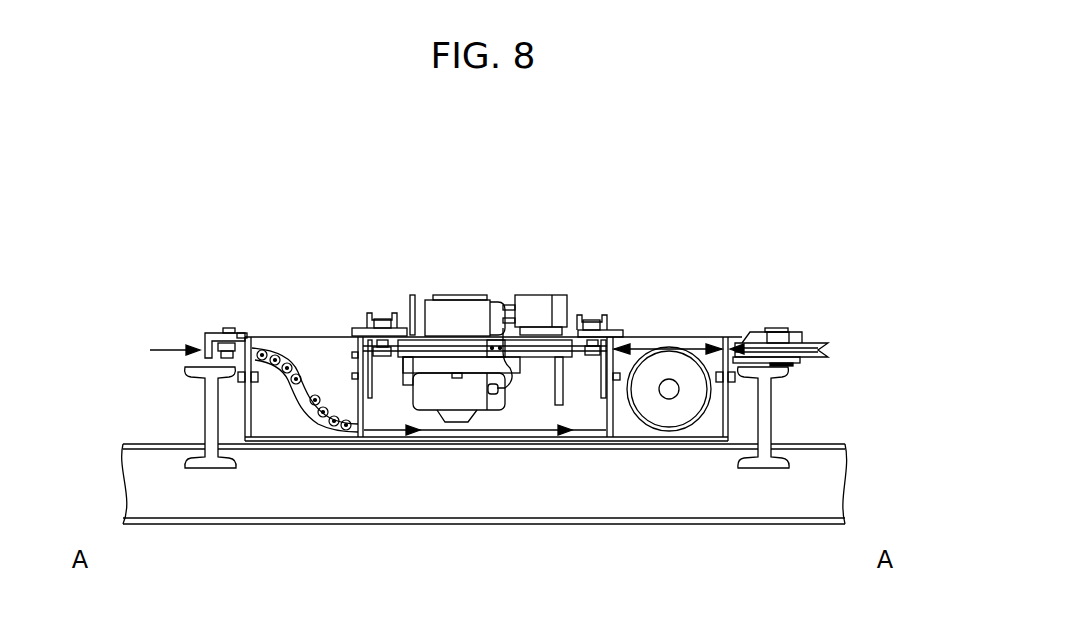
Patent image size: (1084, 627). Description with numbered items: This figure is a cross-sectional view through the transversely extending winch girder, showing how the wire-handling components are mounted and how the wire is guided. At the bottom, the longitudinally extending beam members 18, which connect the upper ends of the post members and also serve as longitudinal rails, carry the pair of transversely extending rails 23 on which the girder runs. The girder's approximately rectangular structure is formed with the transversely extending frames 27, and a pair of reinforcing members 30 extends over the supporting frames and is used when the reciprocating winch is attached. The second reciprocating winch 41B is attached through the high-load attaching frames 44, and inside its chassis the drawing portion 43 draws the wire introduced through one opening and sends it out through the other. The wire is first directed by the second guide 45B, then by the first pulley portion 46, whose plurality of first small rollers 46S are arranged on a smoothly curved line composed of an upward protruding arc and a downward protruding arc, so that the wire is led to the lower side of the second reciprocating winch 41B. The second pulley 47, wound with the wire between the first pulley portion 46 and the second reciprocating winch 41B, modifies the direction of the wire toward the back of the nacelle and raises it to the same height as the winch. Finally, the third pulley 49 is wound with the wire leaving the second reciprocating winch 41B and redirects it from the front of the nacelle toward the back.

The beam member 18 is at (750, 518).
The transversely extending rail 23 is at (207, 406).
The transversely extending frame 27 is at (247, 403).
The reinforcing member 30 is at (368, 400).
The second reciprocating winch 41B is at (540, 275).
The drawing portion 43 is at (455, 298).
The high-load attaching frame 44 is at (379, 313).
The second guide 45B is at (228, 328).
The first pulley portion 46 is at (294, 318).
The first small roller 46S is at (296, 382).
The second pulley 47 is at (670, 358).
The third pulley 49 is at (781, 330).